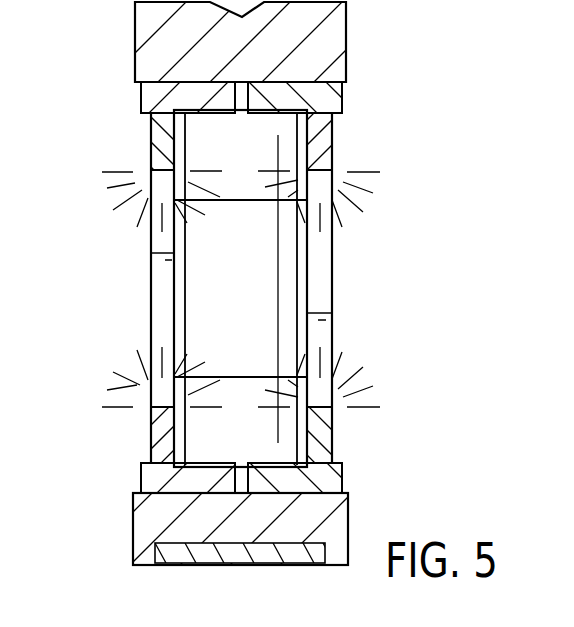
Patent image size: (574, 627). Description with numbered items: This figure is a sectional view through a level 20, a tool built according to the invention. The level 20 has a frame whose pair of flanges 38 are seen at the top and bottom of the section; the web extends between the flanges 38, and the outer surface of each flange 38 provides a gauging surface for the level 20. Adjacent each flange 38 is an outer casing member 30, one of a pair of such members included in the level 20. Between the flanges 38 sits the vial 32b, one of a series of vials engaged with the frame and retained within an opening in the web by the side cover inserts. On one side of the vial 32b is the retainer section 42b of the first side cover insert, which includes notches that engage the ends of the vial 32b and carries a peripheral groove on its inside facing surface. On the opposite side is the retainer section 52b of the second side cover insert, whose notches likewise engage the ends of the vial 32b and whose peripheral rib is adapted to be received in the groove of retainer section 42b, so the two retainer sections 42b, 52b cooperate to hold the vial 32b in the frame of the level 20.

The level 20 is at (87, 92).
The flange 38 is at (347, 28).
The outer casing member 30 is at (352, 102).
The retainer section 52b is at (149, 132).
The retainer section 42b is at (333, 156).
The vial 32b is at (168, 297).